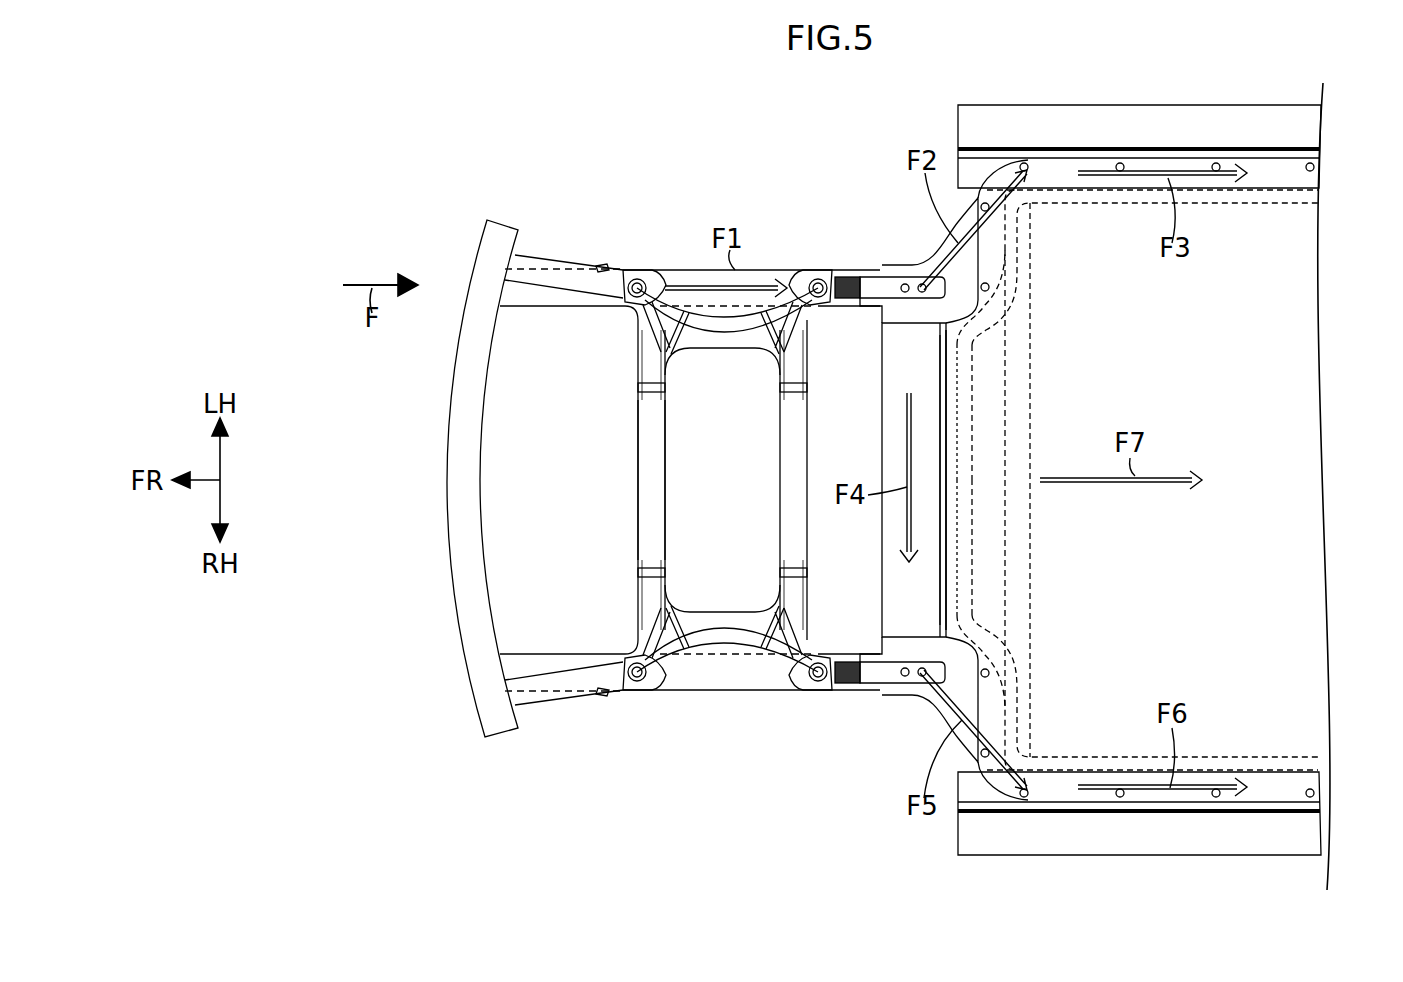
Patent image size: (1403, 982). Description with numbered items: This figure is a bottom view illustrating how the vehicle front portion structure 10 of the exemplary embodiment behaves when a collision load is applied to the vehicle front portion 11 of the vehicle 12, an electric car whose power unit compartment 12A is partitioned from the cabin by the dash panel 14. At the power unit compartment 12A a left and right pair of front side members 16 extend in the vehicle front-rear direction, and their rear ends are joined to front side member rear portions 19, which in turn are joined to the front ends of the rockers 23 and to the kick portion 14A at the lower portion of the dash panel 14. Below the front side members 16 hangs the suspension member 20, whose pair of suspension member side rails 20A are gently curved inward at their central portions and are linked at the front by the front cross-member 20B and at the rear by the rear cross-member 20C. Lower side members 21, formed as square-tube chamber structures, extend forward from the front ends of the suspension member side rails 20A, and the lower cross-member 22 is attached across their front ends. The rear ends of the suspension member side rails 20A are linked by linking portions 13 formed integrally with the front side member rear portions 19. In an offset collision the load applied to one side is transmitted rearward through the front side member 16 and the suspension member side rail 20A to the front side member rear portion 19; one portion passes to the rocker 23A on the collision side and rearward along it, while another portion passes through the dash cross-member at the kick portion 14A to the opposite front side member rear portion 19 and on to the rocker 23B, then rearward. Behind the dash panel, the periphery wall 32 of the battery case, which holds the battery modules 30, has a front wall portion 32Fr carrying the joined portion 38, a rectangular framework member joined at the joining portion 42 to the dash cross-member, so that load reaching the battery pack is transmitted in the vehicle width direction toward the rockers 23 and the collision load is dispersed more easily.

The vehicle front portion structure 10 is at (395, 143).
The vehicle front portion 11 is at (578, 224).
The vehicle 12 is at (389, 135).
The power unit compartment 12A is at (537, 538).
The linking portion 13 is at (863, 270).
The dash panel 14 is at (893, 572).
The kick portion 14A is at (940, 606).
The front side member 16 is at (657, 266).
The front side member rear portion 19 is at (912, 265).
The suspension member 20 is at (806, 444).
The suspension member side rail 20A is at (720, 332).
The front cross-member 20B is at (640, 475).
The rear cross-member 20C is at (780, 506).
The lower side member 21 is at (565, 285).
The lower cross-member 22 is at (458, 513).
The rocker 23 is at (1138, 122).
The rocker at the collision side 23A is at (1138, 121).
The rocker at the opposite side from the collision side 23B is at (1170, 855).
The battery module 30 is at (1275, 303).
The periphery wall 32 is at (972, 523).
The front wall portion 32Fr is at (1080, 480).
The joined portion 38 is at (946, 557).
The joining portion 42 is at (946, 500).